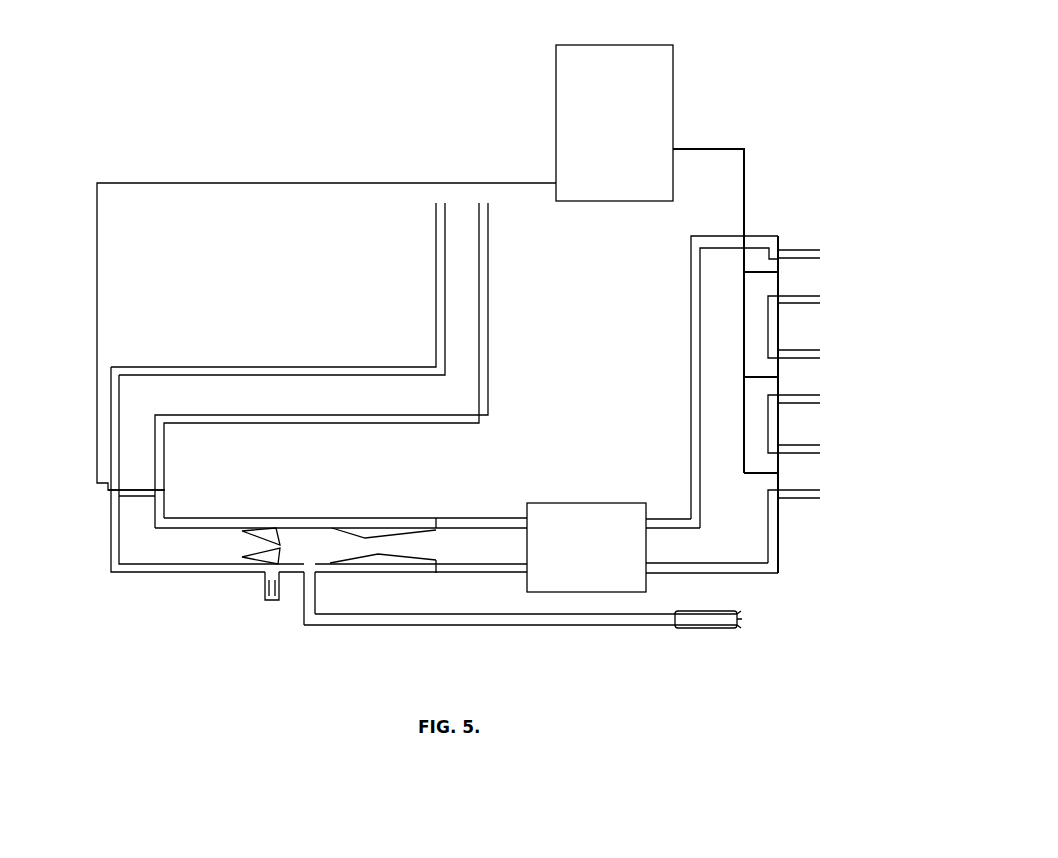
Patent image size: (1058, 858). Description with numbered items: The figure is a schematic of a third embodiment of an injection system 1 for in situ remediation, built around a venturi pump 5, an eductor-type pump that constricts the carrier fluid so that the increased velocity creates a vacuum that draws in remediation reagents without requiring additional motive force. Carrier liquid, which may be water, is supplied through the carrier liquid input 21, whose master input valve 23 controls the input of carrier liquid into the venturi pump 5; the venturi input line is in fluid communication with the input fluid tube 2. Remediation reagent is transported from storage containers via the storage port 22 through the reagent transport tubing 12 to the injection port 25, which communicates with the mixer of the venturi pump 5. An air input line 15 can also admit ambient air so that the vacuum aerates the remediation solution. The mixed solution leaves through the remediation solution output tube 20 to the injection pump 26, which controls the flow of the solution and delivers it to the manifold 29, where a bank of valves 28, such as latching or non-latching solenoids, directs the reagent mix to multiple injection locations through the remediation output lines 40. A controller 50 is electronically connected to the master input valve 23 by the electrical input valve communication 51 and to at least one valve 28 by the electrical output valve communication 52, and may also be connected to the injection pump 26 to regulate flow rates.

The injection system 1 is at (178, 95).
The input fluid tube 2 is at (167, 555).
The venturi pump 5 is at (310, 518).
The reagent transport tubing 12 is at (405, 624).
The air input line 15 is at (262, 590).
The remediation solution output tube 20 is at (462, 543).
The carrier liquid input 21 is at (462, 326).
The storage port 22 is at (718, 623).
The master input valve 23 is at (125, 495).
The injection port 25 is at (303, 607).
The injection pump 26 is at (585, 543).
The valves 28 is at (779, 250).
The manifold 29 is at (718, 316).
The remediation output line 40 is at (802, 283).
The controller 50 is at (658, 115).
The electrical input valve communication 51 is at (297, 182).
The electrical output valve communication 52 is at (744, 193).